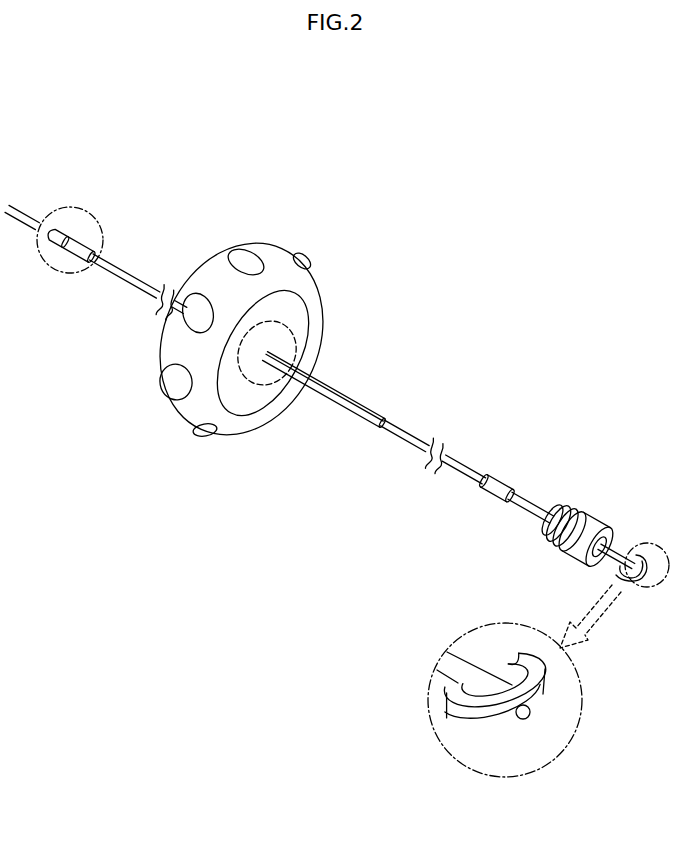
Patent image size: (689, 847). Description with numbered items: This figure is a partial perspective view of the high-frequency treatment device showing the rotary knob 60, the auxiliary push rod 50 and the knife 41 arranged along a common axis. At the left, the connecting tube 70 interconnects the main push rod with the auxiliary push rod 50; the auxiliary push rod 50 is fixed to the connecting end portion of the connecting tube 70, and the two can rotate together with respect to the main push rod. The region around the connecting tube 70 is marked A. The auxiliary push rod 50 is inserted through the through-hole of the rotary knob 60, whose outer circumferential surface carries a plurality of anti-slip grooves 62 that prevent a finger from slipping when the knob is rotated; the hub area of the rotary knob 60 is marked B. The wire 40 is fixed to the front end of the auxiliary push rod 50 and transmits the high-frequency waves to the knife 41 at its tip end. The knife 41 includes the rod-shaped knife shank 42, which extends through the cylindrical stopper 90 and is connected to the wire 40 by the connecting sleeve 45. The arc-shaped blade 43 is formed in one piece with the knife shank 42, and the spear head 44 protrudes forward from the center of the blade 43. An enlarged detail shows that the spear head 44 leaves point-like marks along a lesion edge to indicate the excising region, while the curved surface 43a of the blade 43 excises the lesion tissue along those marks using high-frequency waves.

The wire 40 is at (412, 423).
The knife 41 is at (644, 547).
The knife shank 42 is at (537, 510).
The blade 43 is at (518, 650).
The curved surface 43a is at (498, 724).
The spear head 44 is at (530, 710).
The connecting sleeve 45 is at (503, 477).
The auxiliary push rod 50 is at (355, 381).
The rotary knob 60 is at (241, 332).
The anti-slip grooves 62 is at (236, 252).
The connecting tube 70 is at (92, 236).
The stopper 90 is at (596, 508).
The detail region A is at (88, 212).
The detail region B is at (295, 332).